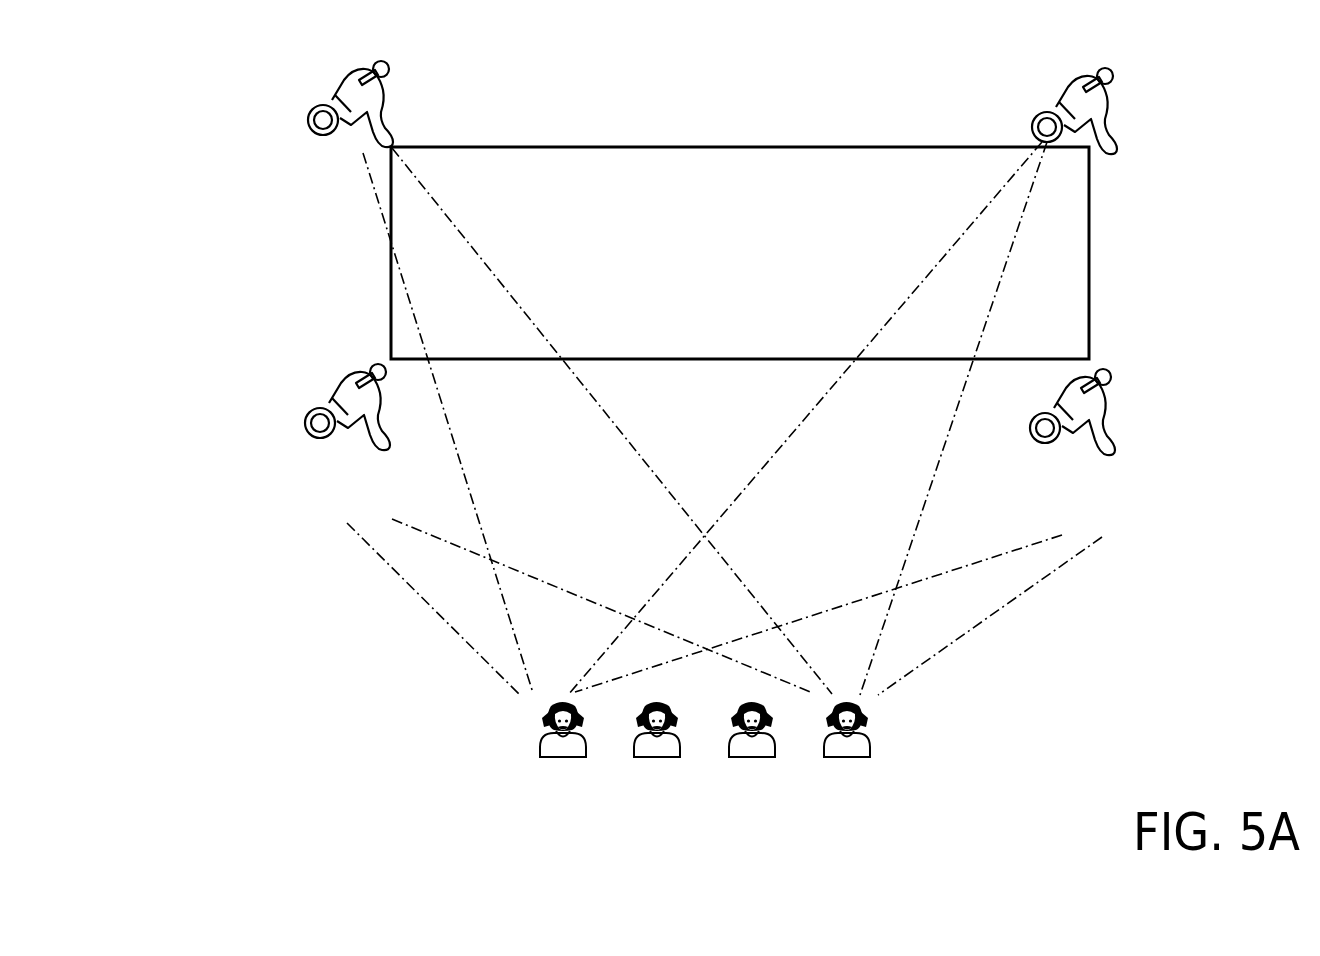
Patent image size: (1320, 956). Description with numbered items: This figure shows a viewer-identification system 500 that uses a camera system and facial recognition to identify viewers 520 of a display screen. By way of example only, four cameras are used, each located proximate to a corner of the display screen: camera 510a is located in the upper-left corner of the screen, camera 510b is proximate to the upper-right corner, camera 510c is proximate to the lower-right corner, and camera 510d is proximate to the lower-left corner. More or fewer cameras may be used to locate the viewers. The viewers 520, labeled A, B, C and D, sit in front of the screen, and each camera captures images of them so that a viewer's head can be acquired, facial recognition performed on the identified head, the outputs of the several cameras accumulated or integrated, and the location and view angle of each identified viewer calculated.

The multi-camera viewer tracking system 500 is at (125, 86).
The camera 510a is at (318, 138).
The camera 510b is at (1110, 110).
The camera 510c is at (1108, 407).
The camera 510d is at (343, 377).
The viewers 520 is at (540, 742).